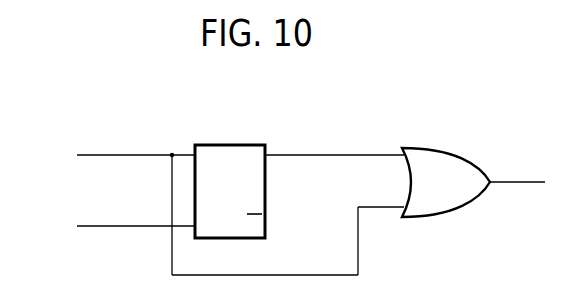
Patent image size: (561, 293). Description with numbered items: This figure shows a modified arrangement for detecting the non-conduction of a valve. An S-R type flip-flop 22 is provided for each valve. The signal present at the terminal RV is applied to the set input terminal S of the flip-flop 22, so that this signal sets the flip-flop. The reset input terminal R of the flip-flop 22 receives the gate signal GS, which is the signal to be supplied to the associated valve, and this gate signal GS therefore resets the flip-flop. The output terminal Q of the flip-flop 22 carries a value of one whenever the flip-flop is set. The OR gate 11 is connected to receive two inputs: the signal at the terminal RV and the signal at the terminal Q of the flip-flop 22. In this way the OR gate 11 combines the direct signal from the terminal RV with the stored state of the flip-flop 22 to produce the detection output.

The S-R type flip-flop 22 is at (226, 145).
The OR gate 11 is at (427, 147).
The terminal RV is at (221, 208).
The gate signal GS is at (116, 225).